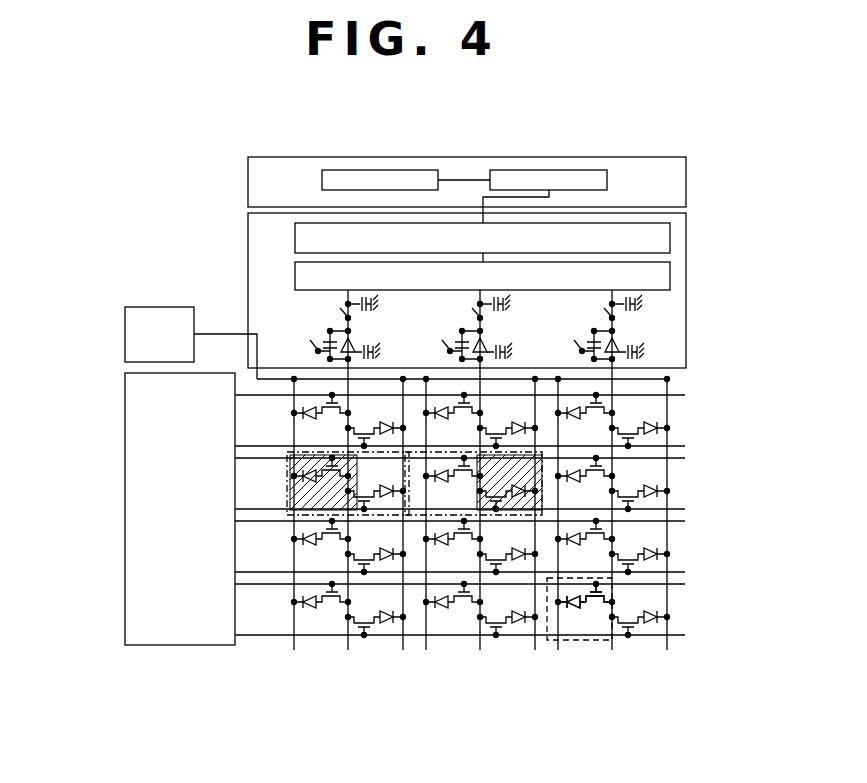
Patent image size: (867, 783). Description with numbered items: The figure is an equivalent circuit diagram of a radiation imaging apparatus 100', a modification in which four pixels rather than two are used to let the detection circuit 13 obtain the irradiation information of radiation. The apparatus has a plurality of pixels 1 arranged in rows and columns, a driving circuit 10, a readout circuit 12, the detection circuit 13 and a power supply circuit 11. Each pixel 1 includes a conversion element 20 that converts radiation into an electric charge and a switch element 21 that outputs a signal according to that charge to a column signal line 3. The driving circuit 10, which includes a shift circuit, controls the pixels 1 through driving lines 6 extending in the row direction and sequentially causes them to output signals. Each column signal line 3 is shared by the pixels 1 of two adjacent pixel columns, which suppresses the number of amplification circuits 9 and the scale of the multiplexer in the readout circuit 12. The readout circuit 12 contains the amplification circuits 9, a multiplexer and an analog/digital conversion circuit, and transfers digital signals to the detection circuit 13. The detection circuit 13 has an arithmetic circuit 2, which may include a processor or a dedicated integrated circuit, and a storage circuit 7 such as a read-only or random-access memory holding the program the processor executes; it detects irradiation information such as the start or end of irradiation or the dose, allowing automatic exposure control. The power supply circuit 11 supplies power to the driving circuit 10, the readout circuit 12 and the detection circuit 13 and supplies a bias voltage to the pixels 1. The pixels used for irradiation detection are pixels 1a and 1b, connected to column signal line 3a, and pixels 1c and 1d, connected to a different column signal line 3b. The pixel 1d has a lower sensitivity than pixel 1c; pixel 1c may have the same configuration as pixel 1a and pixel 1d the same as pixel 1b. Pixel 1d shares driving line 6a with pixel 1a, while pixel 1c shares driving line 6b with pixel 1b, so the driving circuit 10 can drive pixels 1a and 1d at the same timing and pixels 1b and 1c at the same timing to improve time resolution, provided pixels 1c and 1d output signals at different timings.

The radiation imaging apparatus 100' is at (410, 417).
The detection circuit 13 is at (686, 183).
The storage circuit 7 is at (368, 170).
The arithmetic circuit 2 is at (568, 170).
The readout circuit 12 is at (686, 245).
The amplification circuits 9 is at (620, 333).
The power supply circuit 11 is at (125, 334).
The driving circuit 10 is at (125, 575).
The driving line 6a is at (685, 446).
The driving line 6b is at (685, 509).
The driving lines 6 is at (685, 584).
The column signal line 3a is at (480, 650).
The column signal line 3b is at (348, 650).
The column signal lines 3 is at (612, 650).
The pixels 1 is at (567, 642).
The conversion element 20 is at (565, 604).
The switch element 21 is at (592, 609).
The pixel 1a is at (440, 452).
The pixel 1b is at (543, 495).
The pixel 1c is at (405, 517).
The pixel 1d is at (300, 458).